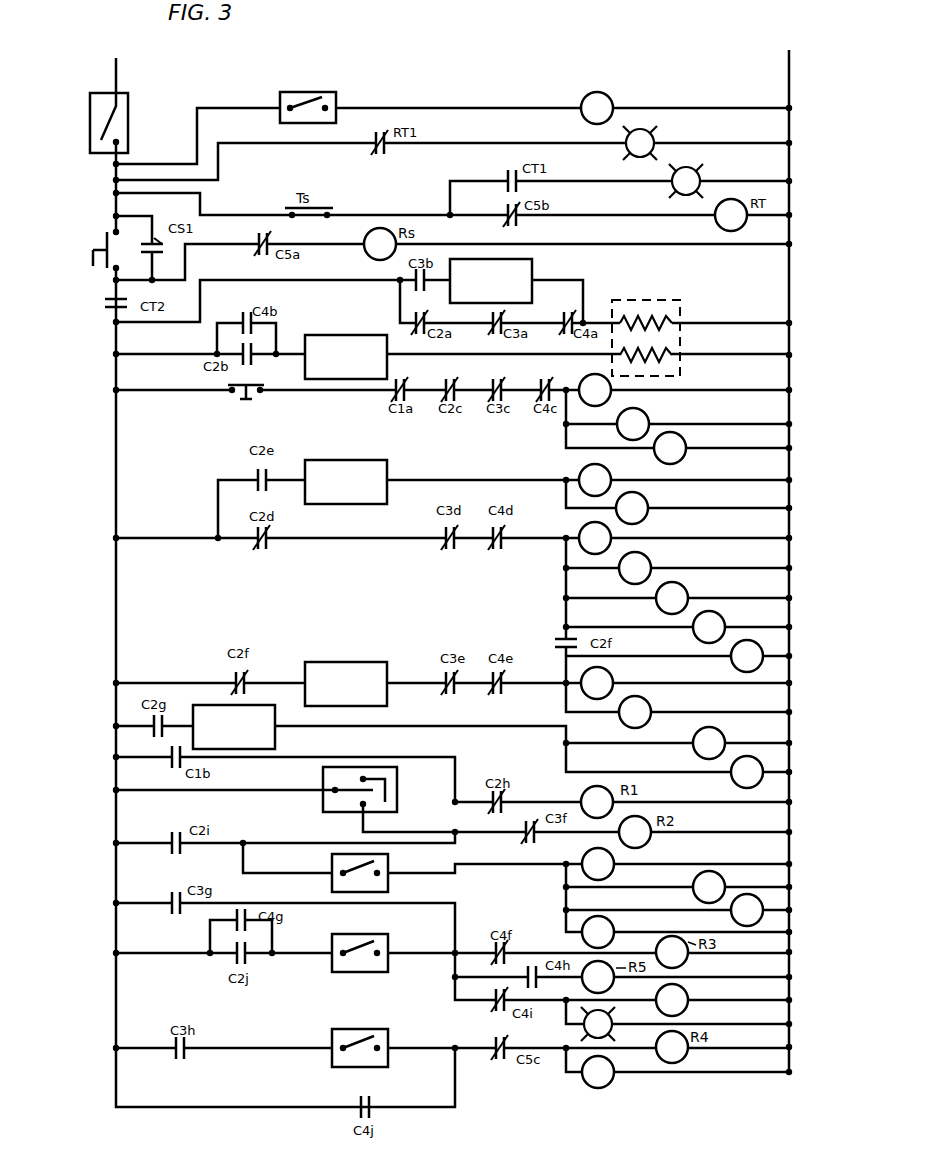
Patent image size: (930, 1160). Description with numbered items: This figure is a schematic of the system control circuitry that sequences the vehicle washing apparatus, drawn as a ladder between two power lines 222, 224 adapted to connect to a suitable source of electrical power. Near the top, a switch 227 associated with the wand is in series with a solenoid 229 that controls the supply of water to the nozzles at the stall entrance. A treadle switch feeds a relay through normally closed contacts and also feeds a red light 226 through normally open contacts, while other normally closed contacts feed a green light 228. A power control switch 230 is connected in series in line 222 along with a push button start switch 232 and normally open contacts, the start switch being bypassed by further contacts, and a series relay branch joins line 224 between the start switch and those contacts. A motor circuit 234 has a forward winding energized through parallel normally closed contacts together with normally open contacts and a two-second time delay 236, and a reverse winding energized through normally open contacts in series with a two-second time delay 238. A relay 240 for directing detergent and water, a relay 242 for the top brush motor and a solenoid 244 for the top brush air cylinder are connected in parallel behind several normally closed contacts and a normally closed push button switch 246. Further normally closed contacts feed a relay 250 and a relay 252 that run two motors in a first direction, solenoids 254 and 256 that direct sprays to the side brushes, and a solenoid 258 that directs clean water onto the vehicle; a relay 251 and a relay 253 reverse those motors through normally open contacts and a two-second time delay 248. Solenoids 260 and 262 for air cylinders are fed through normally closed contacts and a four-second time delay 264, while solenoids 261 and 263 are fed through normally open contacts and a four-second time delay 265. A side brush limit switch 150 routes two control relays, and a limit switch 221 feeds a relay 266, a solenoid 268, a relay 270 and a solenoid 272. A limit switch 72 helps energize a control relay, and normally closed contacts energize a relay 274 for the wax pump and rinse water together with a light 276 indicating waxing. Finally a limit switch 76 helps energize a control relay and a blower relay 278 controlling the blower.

The power line 222 is at (120, 66).
The power line 224 is at (793, 58).
The red light 226 is at (703, 172).
The switch 227 is at (330, 92).
The green light 228 is at (660, 138).
The solenoid 229 is at (611, 102).
The power control switch 230 is at (88, 122).
The push button start switch 232 is at (100, 262).
The motor circuit 234 is at (683, 312).
The two-second time delay 236 is at (533, 272).
The two-second time delay 238 is at (340, 335).
The relay 240 is at (590, 383).
The relay 242 is at (648, 418).
The solenoid 244 is at (683, 446).
The normally closed push button switch 246 is at (250, 390).
The two-second time delay 248 is at (392, 470).
The relay 250 is at (586, 532).
The relay 251 is at (608, 472).
The relay 252 is at (650, 563).
The relay 253 is at (645, 503).
The solenoid 254 is at (686, 592).
The solenoid 256 is at (723, 621).
The solenoid 258 is at (735, 660).
The solenoid 260 is at (587, 677).
The solenoid 261 is at (722, 739).
The solenoid 262 is at (650, 708).
The solenoid 263 is at (733, 777).
The four-second time delay 264 is at (384, 664).
The four-second time delay 265 is at (278, 738).
The relay 266 is at (612, 871).
The solenoid 268 is at (725, 885).
The relay 270 is at (614, 926).
The solenoid 272 is at (732, 916).
The relay 274 is at (688, 991).
The light 276 is at (614, 1017).
The blower relay 278 is at (606, 1086).
The side brush limit switch 150 is at (322, 776).
The limit switch 221 is at (388, 868).
The limit switch 72 is at (388, 944).
The limit switch 76 is at (390, 1040).